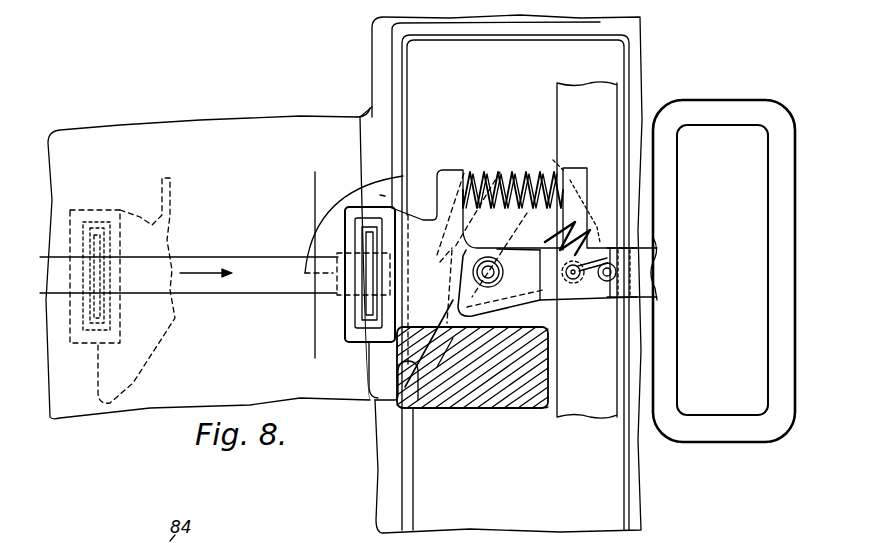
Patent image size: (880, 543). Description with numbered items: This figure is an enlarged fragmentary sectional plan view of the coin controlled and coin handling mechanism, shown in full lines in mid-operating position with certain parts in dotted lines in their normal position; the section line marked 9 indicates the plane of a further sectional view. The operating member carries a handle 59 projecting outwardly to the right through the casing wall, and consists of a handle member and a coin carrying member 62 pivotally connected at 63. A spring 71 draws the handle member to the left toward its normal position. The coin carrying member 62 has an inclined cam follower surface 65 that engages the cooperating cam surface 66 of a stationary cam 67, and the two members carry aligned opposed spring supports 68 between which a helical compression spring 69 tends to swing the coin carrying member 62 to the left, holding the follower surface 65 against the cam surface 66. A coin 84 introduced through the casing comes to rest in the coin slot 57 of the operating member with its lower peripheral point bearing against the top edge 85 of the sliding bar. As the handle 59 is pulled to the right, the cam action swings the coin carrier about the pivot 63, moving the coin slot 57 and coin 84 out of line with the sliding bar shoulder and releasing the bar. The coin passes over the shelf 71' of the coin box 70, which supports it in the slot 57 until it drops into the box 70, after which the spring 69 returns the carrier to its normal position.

The section line 9- 9 is at (354, 266).
The coin slot 57 is at (372, 307).
The handle 59 is at (700, 418).
The coin carrying member 62 is at (135, 217).
The pivot 63 is at (497, 277).
The inclined cam follower surface 65 is at (437, 367).
The cam surface 66 is at (416, 408).
The stationary cam 67 is at (508, 408).
The spring supports 68 is at (477, 188).
The helical compression spring 69 is at (500, 172).
The coin box 70 is at (415, 500).
The spring 71 is at (582, 229).
The shelf 71' is at (373, 171).
The coin 84 is at (368, 300).
The top edge 85 is at (340, 257).